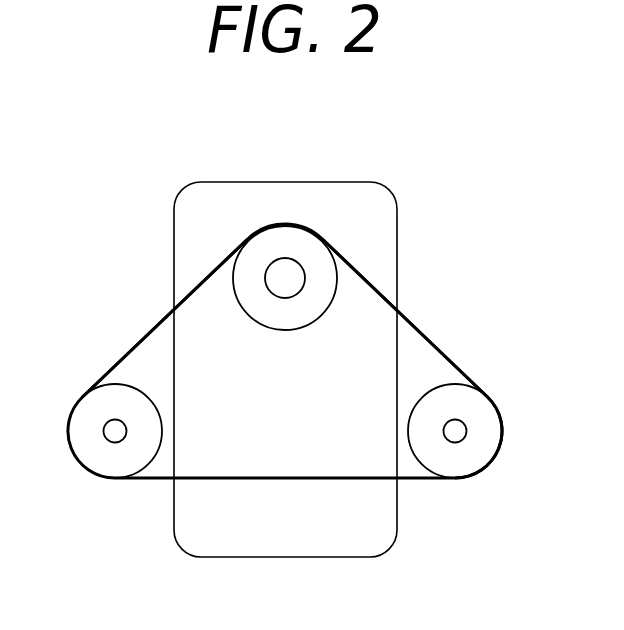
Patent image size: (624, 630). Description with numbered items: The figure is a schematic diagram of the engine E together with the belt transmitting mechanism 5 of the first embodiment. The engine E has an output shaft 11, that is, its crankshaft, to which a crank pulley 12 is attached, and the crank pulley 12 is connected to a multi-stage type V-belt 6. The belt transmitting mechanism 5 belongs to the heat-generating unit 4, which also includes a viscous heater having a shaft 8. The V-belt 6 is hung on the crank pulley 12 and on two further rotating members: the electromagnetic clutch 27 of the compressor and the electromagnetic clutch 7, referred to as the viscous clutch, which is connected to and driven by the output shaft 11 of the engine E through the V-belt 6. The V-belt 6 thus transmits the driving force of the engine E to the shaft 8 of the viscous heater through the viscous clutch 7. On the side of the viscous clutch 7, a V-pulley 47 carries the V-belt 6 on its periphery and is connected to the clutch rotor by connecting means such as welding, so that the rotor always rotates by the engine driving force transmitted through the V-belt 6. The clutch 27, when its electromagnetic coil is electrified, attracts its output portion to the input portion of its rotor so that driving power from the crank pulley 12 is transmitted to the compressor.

The engine E is at (397, 215).
The heat-generating unit 4 is at (495, 336).
The belt transmitting mechanism 5 is at (121, 334).
The V-belt 6 is at (415, 325).
The electromagnetic clutch (viscous clutch) 7 is at (504, 402).
The shaft 8 is at (458, 428).
The output shaft 11 is at (272, 274).
The crank pulley 12 is at (262, 234).
The electromagnetic clutch 27 is at (102, 457).
The V-pulley 47 is at (445, 463).